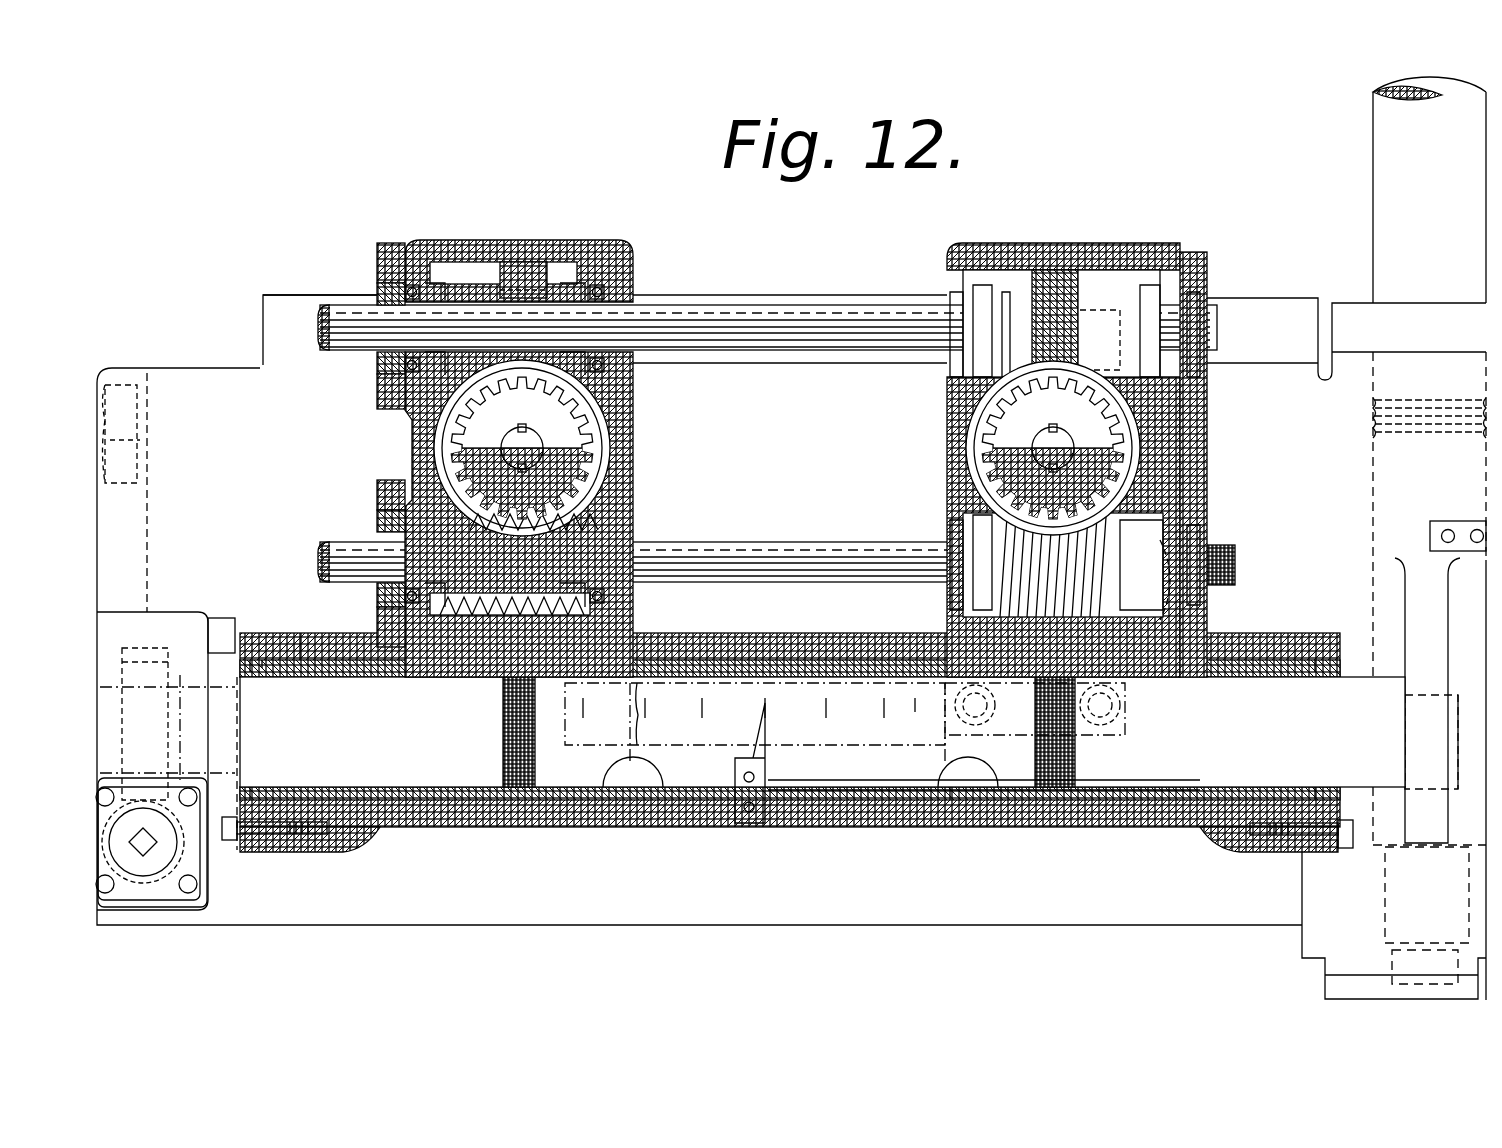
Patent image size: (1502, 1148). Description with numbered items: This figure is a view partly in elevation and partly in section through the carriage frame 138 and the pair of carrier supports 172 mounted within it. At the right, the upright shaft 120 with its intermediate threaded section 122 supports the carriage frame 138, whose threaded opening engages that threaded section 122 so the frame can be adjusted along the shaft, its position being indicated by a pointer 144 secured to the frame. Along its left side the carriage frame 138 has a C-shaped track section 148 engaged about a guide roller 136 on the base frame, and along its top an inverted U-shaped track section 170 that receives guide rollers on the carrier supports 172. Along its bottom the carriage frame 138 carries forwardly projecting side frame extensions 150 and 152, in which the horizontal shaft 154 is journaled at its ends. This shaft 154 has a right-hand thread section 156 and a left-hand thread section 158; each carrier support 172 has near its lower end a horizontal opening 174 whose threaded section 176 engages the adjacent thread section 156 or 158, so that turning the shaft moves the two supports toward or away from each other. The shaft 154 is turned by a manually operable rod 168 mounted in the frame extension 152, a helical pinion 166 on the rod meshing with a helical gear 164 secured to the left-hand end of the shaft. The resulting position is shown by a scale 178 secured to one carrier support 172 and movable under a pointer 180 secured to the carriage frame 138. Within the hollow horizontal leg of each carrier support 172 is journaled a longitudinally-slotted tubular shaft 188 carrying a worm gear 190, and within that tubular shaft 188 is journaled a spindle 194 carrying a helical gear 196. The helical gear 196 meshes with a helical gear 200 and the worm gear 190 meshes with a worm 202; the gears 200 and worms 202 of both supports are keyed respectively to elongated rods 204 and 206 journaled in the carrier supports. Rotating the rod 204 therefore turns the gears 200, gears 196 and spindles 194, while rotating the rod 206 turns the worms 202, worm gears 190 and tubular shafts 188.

The upright shaft 120 is at (1372, 248).
The threaded section 122 is at (1390, 433).
The guide roller 136 is at (140, 440).
The carriage frame 138 is at (208, 362).
The pointer 144 is at (1438, 520).
The C-shaped track section 148 is at (137, 365).
The side frame extension 150 is at (1418, 830).
The side frame extension 152 is at (205, 620).
The horizontal shaft 154 is at (851, 801).
The right-hand thread section 156 is at (1065, 757).
The left-hand thread section 158 is at (821, 763).
The helical gear 164 is at (160, 650).
The helical pinion 166 is at (165, 900).
The manually operable rod 168 is at (150, 845).
The inverted U-shaped track section 170 is at (309, 296).
The carrier support 172 is at (586, 812).
The horizontal opening 174 is at (660, 790).
The threaded section 176 is at (440, 775).
The scale 178 is at (865, 725).
The pointer 180 is at (768, 720).
The tubular shaft 188 is at (623, 466).
The worm gear 190 is at (625, 480).
The spindle 194 is at (562, 432).
The helical gear 196 is at (610, 432).
The helical gear 200 is at (525, 262).
The worm 202 is at (640, 642).
The elongated rod 204 is at (815, 343).
The elongated rod 206 is at (805, 556).